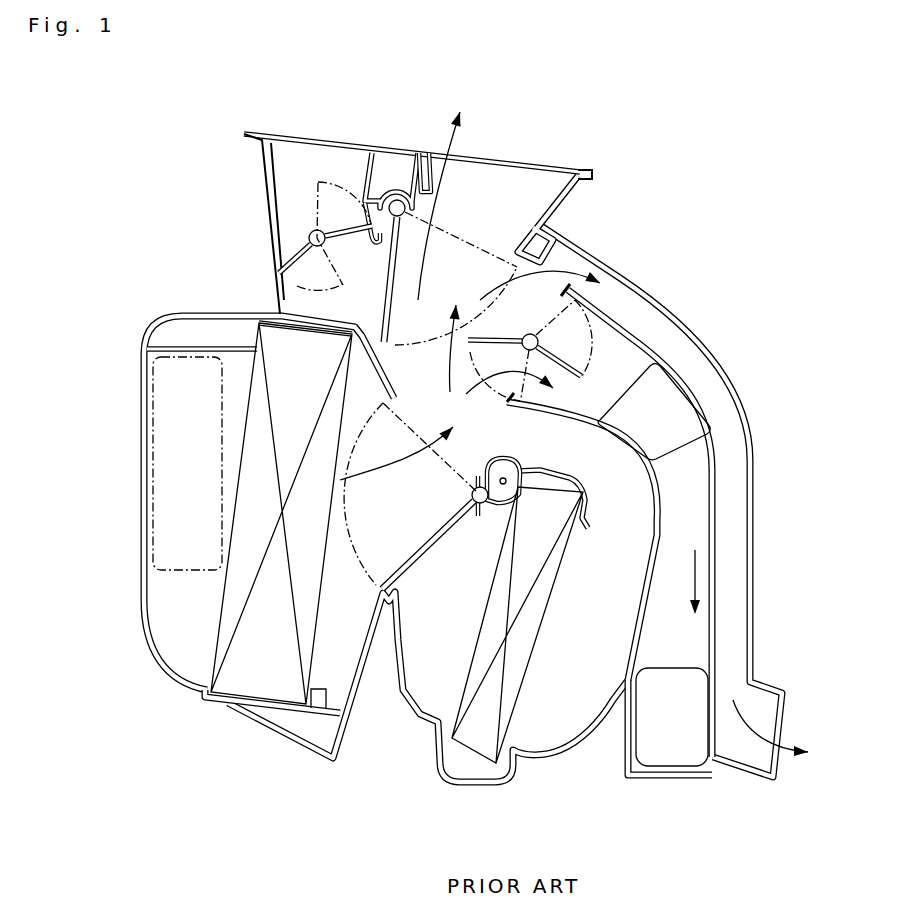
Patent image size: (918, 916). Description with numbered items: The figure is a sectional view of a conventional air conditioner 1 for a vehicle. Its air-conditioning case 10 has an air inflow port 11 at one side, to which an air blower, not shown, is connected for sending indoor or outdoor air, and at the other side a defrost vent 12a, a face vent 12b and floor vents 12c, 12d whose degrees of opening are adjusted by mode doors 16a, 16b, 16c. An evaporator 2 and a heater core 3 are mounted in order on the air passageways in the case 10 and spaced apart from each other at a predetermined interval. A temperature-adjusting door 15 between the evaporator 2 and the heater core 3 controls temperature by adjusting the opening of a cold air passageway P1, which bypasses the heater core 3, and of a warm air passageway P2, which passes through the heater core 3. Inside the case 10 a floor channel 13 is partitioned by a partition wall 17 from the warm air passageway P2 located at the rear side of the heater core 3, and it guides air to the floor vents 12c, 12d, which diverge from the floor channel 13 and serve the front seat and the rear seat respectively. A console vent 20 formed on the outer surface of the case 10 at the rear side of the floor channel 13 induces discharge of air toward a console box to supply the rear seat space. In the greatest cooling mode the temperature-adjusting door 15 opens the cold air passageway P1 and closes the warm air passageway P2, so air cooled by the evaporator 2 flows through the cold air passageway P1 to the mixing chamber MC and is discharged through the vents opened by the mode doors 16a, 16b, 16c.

The air conditioner 1 is at (443, 454).
The evaporator 2 is at (267, 683).
The heater core 3 is at (473, 753).
The air-conditioning case 10 is at (135, 470).
The air inflow port 11 is at (185, 573).
The defrost vent 12a is at (322, 140).
The face vent 12b is at (518, 170).
The floor vent for a front seat 12c is at (680, 453).
The floor vent for a rear seat 12d is at (673, 667).
The floor channel 13 is at (680, 477).
The temperature-adjusting door 15 is at (423, 540).
The mode door 16a is at (298, 255).
The mode door 16b is at (388, 288).
The mode door 16c is at (558, 332).
The partition wall 17 is at (667, 512).
The console vent 20 is at (722, 397).
The mixing chamber MC is at (437, 366).
The cold air passageway P1 is at (429, 425).
The warm air passageway P2 is at (461, 610).